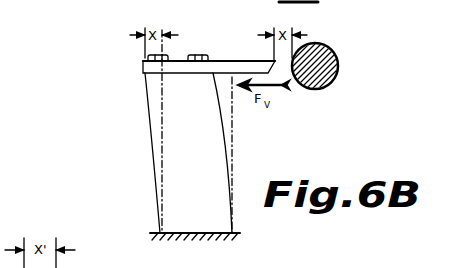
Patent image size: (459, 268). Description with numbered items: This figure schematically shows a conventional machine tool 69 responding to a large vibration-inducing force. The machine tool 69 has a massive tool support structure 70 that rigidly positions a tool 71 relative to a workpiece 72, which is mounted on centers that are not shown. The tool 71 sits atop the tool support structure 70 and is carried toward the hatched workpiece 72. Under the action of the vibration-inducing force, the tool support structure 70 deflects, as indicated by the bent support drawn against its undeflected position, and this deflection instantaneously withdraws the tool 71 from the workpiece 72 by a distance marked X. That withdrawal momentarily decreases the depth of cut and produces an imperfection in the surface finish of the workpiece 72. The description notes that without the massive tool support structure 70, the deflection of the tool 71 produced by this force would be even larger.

The machine tool 69 is at (166, 135).
The tool support structure 70 is at (147, 145).
The tool 71 is at (237, 66).
The workpiece 72 is at (338, 70).